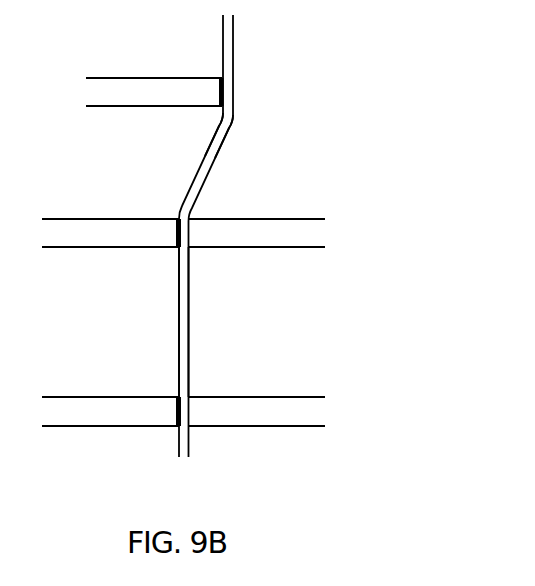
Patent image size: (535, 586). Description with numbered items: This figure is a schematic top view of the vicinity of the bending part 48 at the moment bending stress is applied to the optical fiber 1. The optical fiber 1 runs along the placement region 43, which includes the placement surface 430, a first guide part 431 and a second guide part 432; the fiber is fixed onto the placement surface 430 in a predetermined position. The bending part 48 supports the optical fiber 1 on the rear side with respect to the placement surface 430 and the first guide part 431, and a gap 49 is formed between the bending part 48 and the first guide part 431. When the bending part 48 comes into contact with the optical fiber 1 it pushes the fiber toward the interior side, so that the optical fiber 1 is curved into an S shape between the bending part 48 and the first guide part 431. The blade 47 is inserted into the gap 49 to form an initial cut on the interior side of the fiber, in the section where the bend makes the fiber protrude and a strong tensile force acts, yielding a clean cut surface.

The optical fiber 1 is at (234, 36).
The blade 47 is at (232, 127).
The bending part 48 is at (128, 85).
The gap 49 is at (127, 155).
The placement region 43 is at (256, 320).
The placement surface 430 is at (288, 325).
The first guide part 431 is at (318, 232).
The second guide part 432 is at (231, 411).